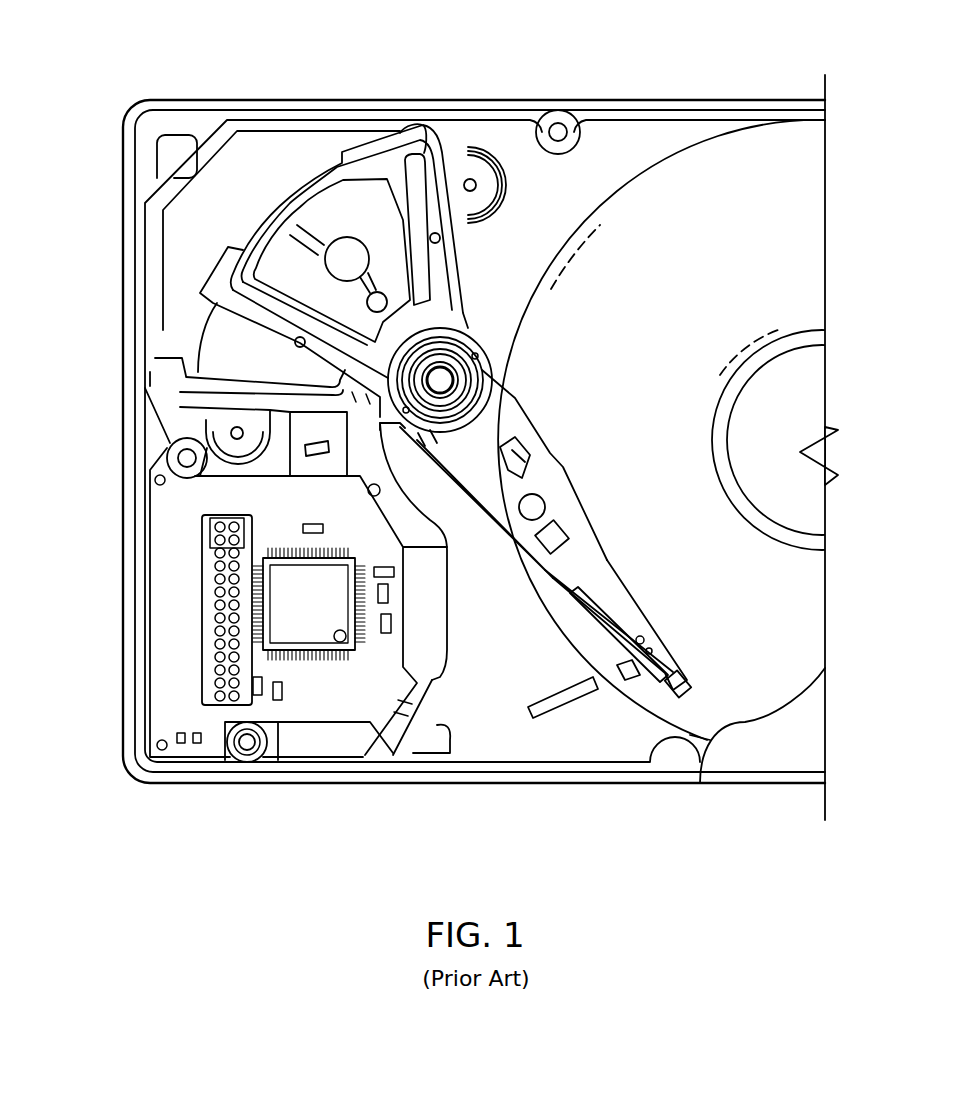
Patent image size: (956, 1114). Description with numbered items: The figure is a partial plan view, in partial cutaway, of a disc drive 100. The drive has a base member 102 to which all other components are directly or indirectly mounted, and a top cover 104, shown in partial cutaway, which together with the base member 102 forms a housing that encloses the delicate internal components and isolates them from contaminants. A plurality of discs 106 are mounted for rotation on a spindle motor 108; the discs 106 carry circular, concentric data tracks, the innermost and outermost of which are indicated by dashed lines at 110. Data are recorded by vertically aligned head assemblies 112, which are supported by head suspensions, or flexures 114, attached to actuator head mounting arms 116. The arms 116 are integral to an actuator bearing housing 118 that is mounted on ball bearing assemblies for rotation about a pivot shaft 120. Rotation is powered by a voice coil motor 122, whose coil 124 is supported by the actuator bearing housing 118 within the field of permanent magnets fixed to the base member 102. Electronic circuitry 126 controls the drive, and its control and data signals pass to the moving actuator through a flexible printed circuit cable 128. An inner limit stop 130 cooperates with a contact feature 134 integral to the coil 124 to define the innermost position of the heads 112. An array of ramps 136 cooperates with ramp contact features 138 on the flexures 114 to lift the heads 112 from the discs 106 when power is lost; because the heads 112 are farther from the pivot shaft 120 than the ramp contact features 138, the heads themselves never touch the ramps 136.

The disc drive 100 is at (476, 76).
The base member 102 is at (605, 100).
The top cover 104 is at (758, 755).
The discs 106 is at (752, 155).
The spindle motor 108 is at (797, 392).
The data tracks 110 is at (567, 260).
The head assemblies 112 is at (688, 677).
The head suspensions or flexures 114 is at (622, 610).
The actuator head mounting arms 116 is at (550, 490).
The actuator bearing housing 118 is at (470, 418).
The pivot shaft 120 is at (443, 382).
The voice coil motor (VCM) 122 is at (283, 158).
The coil 124 is at (247, 263).
The electronic circuitry 126 is at (327, 702).
The flexible printed circuit cable (PCC) 128 is at (442, 678).
The inner limit stop 130 is at (165, 368).
The contact feature 134 is at (203, 292).
The ramps 136 is at (553, 702).
The ramp contact feature 138 is at (630, 680).